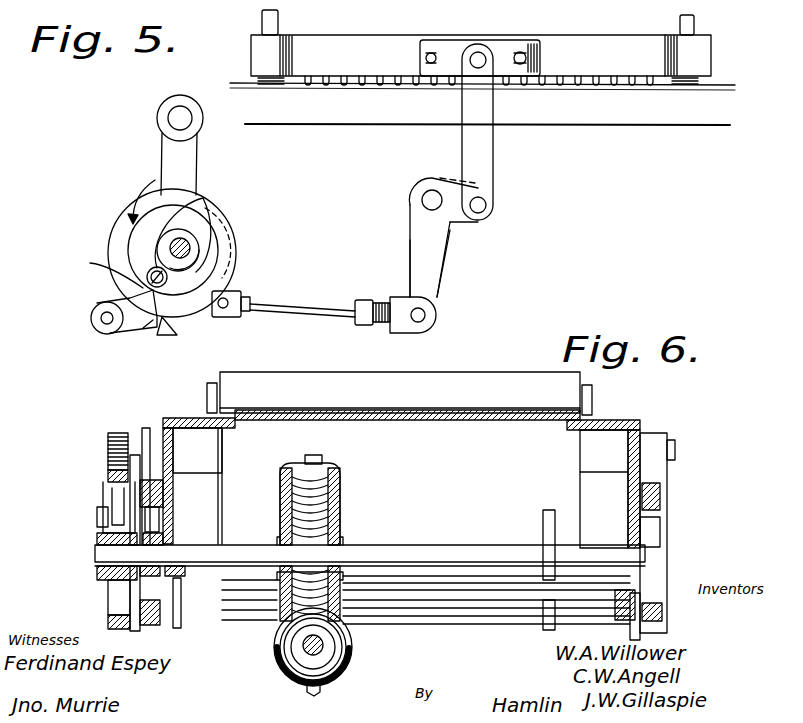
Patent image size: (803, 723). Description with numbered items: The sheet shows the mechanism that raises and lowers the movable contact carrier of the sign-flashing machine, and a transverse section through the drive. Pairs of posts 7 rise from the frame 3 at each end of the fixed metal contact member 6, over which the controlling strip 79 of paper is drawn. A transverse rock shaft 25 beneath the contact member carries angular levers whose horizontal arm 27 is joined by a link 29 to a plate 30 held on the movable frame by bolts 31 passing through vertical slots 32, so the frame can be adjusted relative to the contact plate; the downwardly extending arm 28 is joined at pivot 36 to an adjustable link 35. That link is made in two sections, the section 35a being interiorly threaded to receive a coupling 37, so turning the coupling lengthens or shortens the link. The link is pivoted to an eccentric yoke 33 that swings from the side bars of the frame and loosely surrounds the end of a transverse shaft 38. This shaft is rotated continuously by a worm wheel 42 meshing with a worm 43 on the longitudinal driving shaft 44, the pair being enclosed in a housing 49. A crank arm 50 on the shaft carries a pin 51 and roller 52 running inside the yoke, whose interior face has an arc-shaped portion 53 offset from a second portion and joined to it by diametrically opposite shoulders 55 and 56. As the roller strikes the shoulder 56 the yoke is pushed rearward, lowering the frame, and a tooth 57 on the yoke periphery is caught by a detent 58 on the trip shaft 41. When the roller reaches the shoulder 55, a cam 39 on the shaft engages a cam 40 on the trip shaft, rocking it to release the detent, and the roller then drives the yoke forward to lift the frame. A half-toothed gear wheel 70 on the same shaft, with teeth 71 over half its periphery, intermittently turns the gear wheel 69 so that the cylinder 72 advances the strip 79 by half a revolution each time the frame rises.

In FIG. 5, the frame 3 is at (616, 118).
In FIG. 6, the frame 3 is at (624, 428).
In FIG. 5, the contact member 6 is at (386, 40).
In FIG. 5, the posts 7 is at (278, 18).
In FIG. 5, the shaft 25 is at (423, 203).
In FIG. 5, the arm 27 is at (447, 185).
In FIG. 5, the arm 28 is at (447, 250).
In FIG. 5, the links 29 is at (485, 147).
In FIG. 5, the plate 30 is at (520, 44).
In FIG. 5, the bolts 31 is at (527, 58).
In FIG. 5, the slots 32 is at (428, 64).
In FIG. 5, the eccentric yoke 33 is at (205, 200).
In FIG. 6, the eccentric yoke 33 is at (125, 604).
In FIG. 5, the link 35 is at (333, 308).
In FIG. 5, the section 35a is at (415, 305).
In FIG. 5, the pivot 36 is at (425, 318).
In FIG. 5, the coupling 37 is at (363, 326).
In FIG. 6, the shaft 38 is at (445, 546).
In FIG. 5, the cam 39 is at (188, 225).
In FIG. 6, the cam 39 is at (525, 570).
In FIG. 5, the cam 40 is at (104, 304).
In FIG. 6, the cam 40 is at (560, 598).
In FIG. 5, the trip shaft 41 is at (104, 324).
In FIG. 6, the worm wheel 42 is at (326, 508).
In FIG. 6, the worm 43 is at (340, 655).
In FIG. 6, the shaft 44 is at (306, 652).
In FIG. 6, the housing 49 is at (338, 485).
In FIG. 5, the crank arm 50 is at (200, 258).
In FIG. 5, the pin 51 is at (190, 315).
In FIG. 6, the pin 51 is at (158, 522).
In FIG. 5, the roller 52 is at (150, 272).
In FIG. 6, the roller 52 is at (162, 506).
In FIG. 5, the arc-shaped portion 53 is at (140, 188).
In FIG. 5, the shoulder 55 is at (172, 192).
In FIG. 5, the shoulder 56 is at (90, 264).
In FIG. 5, the tooth 57 is at (155, 321).
In FIG. 5, the detent 58 is at (162, 336).
In FIG. 6, the gear wheel 69 is at (108, 445).
In FIG. 6, the gear wheel 70 is at (108, 474).
In FIG. 6, the teeth 71 is at (442, 620).
In FIG. 6, the cylinder 72 is at (96, 514).
In FIG. 6, the controlling strip 79 is at (330, 672).